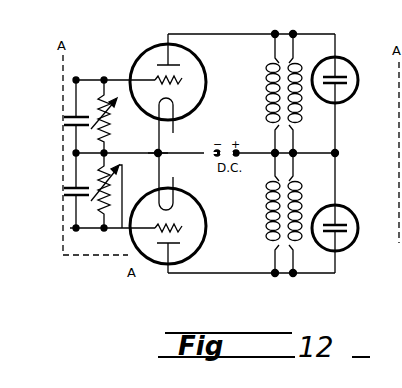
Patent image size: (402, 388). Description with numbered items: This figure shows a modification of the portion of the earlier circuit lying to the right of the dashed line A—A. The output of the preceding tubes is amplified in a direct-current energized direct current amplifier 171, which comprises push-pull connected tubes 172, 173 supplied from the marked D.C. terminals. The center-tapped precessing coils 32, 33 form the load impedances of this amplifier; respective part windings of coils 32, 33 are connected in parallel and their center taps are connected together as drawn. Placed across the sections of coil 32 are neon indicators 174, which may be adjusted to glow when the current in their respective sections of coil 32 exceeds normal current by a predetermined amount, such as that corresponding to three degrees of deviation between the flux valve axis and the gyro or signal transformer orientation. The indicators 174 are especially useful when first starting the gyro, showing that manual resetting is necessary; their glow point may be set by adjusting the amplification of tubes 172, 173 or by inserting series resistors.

The direct current amplifier 171 is at (148, 146).
The push-pull connected tube 172 is at (141, 53).
The push-pull connected tube 173 is at (198, 254).
The neon indicator 174 is at (353, 61).
The center-tapped precessing coil 32 is at (268, 97).
The center-tapped precessing coil 33 is at (303, 106).